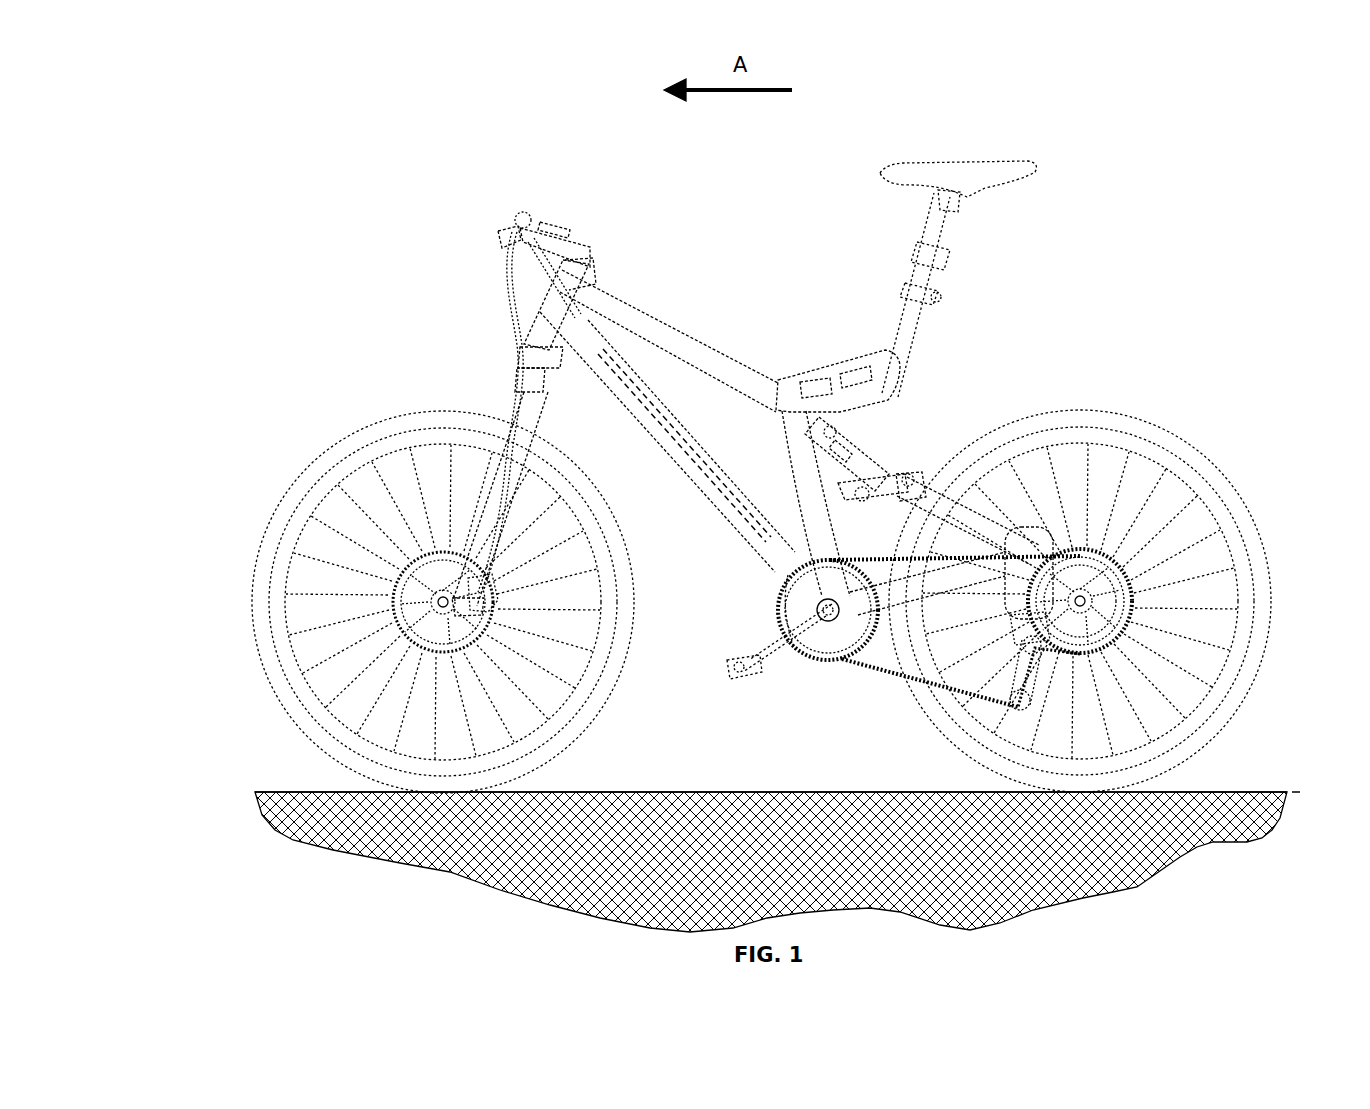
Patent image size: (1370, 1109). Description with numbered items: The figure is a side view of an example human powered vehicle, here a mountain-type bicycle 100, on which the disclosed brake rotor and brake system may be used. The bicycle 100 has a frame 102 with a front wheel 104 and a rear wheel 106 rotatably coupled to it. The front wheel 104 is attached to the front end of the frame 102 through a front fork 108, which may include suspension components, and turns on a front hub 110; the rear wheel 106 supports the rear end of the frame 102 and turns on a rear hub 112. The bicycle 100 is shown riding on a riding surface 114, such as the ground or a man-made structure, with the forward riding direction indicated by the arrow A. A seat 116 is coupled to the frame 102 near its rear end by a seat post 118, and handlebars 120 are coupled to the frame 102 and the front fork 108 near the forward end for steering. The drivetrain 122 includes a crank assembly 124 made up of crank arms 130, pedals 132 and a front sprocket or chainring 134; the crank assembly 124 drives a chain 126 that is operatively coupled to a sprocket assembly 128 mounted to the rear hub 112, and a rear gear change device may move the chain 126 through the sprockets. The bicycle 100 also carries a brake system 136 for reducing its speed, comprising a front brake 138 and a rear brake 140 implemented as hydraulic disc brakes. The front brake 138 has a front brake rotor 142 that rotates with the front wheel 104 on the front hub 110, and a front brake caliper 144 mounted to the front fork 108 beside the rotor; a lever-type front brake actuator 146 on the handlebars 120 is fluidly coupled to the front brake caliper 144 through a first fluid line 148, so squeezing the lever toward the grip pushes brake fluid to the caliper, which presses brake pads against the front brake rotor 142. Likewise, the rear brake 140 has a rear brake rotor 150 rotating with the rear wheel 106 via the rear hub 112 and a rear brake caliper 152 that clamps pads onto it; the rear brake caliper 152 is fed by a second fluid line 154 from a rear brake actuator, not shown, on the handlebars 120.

The bicycle 100 is at (545, 116).
The frame 102 is at (722, 357).
The front wheel 104 is at (356, 438).
The rear wheel 106 is at (1152, 432).
The front fork 108 is at (490, 497).
The front hub 110 is at (448, 610).
The rear hub 112 is at (1086, 604).
The riding surface 114 is at (292, 790).
The seat 116 is at (975, 175).
The seat post 118 is at (930, 275).
The handlebars 120 is at (516, 212).
The drivetrain 122 is at (792, 712).
The crank assembly 124 is at (766, 597).
The chain 126 is at (880, 680).
The sprocket assembly 128 is at (1060, 540).
The crank arms 130 is at (773, 648).
The pedals 132 is at (727, 665).
The chainring 134 is at (810, 647).
The brake system 136 is at (484, 294).
The front brake 138 is at (405, 548).
The rear brake 140 is at (1124, 546).
The front brake rotor 142 is at (390, 603).
The front brake caliper 144 is at (485, 603).
The front brake actuator 146 is at (486, 238).
The first fluid line 148 is at (520, 345).
The rear brake rotor 150 is at (1136, 600).
The rear brake caliper 152 is at (1042, 537).
The second fluid line 154 is at (703, 470).